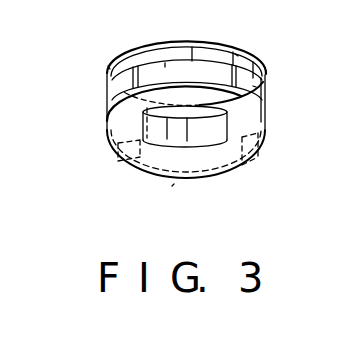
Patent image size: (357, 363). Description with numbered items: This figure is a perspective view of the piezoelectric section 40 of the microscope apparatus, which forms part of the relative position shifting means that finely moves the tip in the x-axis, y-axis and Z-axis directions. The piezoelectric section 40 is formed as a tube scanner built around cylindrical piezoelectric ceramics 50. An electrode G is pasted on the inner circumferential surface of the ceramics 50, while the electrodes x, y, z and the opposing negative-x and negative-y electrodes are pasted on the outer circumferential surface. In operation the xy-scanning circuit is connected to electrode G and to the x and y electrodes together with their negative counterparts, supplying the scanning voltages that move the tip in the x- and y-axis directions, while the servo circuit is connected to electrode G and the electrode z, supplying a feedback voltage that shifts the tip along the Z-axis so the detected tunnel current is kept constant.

The piezoelectric section 40 is at (187, 121).
The cylindrical piezoelectric ceramics 50 is at (240, 126).
The electrode G is at (213, 175).
The electrode x is at (170, 65).
The electrode y is at (253, 87).
The electrode z is at (236, 55).